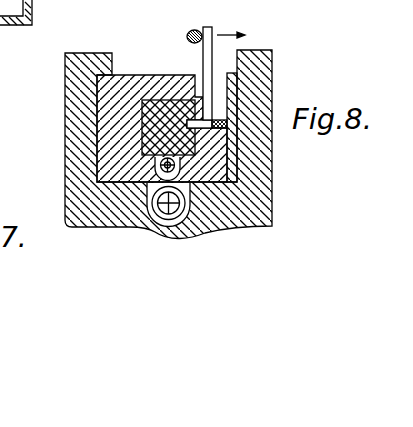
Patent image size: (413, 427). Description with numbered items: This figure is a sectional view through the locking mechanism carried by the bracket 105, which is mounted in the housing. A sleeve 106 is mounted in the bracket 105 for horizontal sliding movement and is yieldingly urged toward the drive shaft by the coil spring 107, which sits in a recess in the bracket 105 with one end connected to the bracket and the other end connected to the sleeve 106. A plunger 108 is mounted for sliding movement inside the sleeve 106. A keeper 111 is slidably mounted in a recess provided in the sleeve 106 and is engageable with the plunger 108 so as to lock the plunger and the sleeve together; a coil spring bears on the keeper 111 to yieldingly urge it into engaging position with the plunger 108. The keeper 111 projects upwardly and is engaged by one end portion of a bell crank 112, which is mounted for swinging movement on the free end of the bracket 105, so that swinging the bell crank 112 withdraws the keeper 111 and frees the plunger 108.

The bracket 105 is at (82, 183).
The sleeve 106 is at (112, 152).
The coil spring 107 is at (165, 215).
The plunger 108 is at (147, 117).
The keeper 111 is at (203, 55).
The bell crank 112 is at (188, 34).